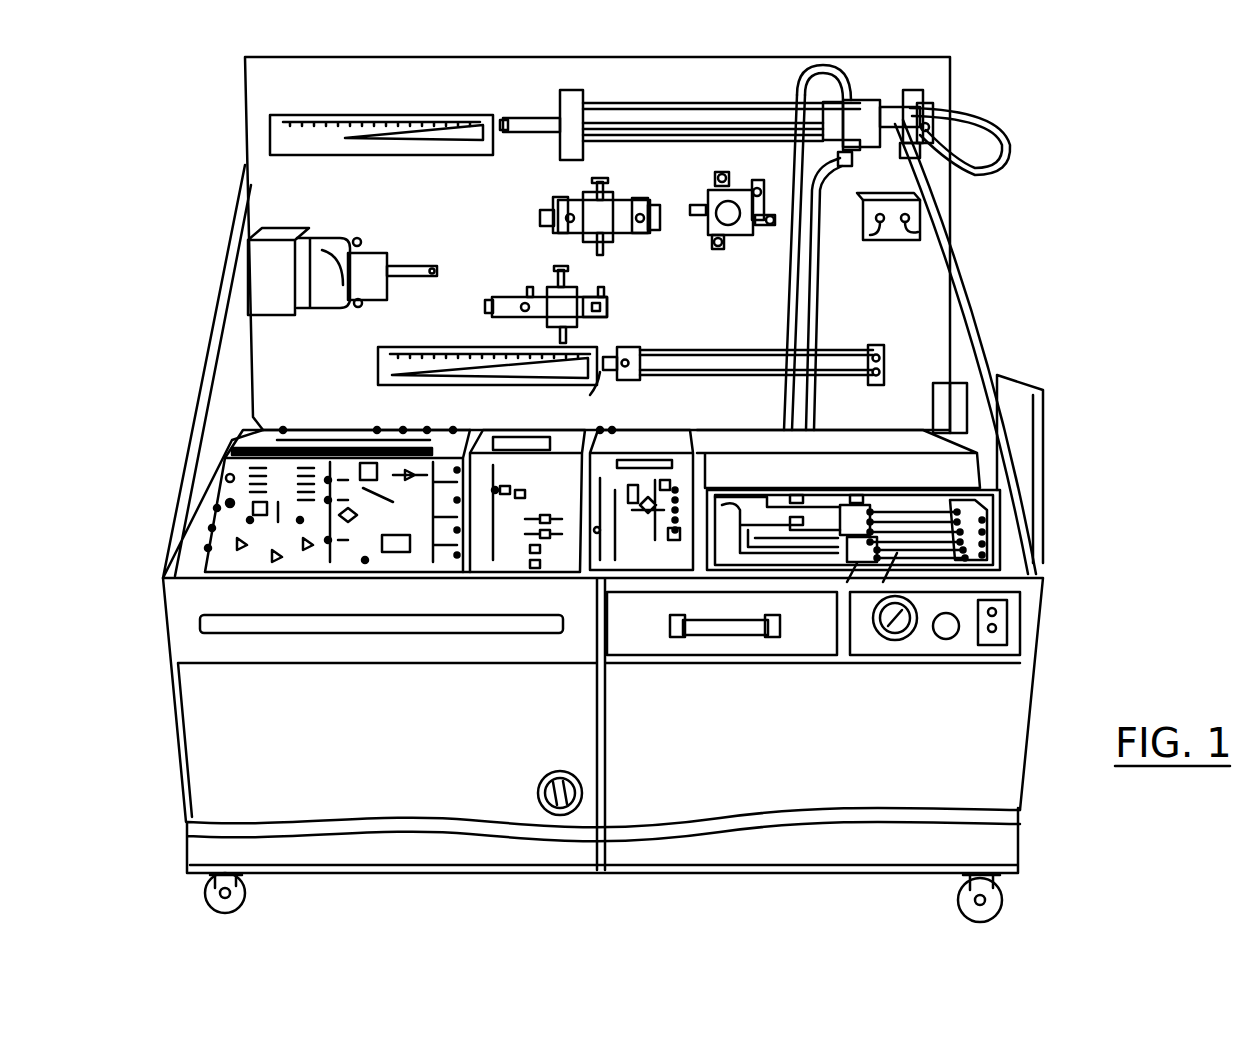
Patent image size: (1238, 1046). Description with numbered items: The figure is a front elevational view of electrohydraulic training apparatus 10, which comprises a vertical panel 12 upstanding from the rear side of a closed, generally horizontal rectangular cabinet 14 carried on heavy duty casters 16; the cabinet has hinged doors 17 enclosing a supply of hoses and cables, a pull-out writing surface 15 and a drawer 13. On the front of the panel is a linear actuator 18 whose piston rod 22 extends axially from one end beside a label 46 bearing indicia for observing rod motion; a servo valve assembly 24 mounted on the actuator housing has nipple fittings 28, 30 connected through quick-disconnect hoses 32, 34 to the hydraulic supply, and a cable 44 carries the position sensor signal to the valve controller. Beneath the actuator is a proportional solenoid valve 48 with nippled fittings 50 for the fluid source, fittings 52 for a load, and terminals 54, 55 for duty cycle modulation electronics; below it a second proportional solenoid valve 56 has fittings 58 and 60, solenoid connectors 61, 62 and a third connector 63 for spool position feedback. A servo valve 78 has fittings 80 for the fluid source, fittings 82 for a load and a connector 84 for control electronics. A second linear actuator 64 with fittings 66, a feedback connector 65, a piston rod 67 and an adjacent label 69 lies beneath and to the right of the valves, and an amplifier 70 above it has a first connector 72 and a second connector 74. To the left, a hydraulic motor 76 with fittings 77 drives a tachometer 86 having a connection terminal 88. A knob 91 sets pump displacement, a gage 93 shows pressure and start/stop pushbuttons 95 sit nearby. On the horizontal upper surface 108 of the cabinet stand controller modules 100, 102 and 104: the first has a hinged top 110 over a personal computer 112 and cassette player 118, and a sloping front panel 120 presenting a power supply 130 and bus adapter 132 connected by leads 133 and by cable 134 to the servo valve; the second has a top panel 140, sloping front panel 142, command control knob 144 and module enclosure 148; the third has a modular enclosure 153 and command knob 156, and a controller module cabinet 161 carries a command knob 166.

The apparatus 10 is at (1154, 189).
The vertical panel 12 is at (962, 84).
The drawer 13 is at (676, 653).
The cabinet 14 is at (1055, 589).
The pull-out writing surface 15 is at (362, 633).
The casters 16 is at (240, 895).
The hinged doors 17 is at (606, 860).
The linear actuator 18 is at (663, 104).
The piston rod 22 is at (512, 115).
The servo valve assembly 24 is at (876, 103).
The nipple fitting 28 is at (812, 72).
The nipple fitting 30 is at (852, 165).
The quick-disconnect fluid hose 32 is at (782, 305).
The quick-disconnect fluid hose 34 is at (818, 285).
The cable 44 is at (1010, 143).
The label 46 is at (402, 117).
The proportional solenoid valve 48 is at (629, 186).
The nippled fittings 50 is at (592, 180).
The fittings 52 is at (562, 198).
The terminal 54 is at (553, 218).
The terminal 55 is at (642, 233).
The second proportional solenoid valve 56 is at (620, 304).
The fittings 58 is at (560, 275).
The fittings 60 is at (525, 290).
The connector 61 is at (528, 314).
The connector 62 is at (612, 313).
The third connector 63 is at (484, 307).
The second linear actuator 64 is at (752, 349).
The connector 65 is at (640, 350).
The fittings 66 is at (890, 352).
The piston rod 67 is at (598, 376).
The label 69 is at (377, 360).
The amplifier 70 is at (925, 217).
The first connector 72 is at (865, 232).
The second connector 74 is at (920, 232).
The hydraulic motor 76 is at (274, 226).
The fittings 77 is at (357, 240).
The servo valve 78 is at (697, 175).
The fittings 80 is at (727, 180).
The fittings 82 is at (772, 215).
The connector 84 is at (760, 221).
The tachometer 86 is at (405, 260).
The connection terminal 88 is at (440, 266).
The knob 91 is at (946, 640).
The gage 93 is at (900, 642).
The start/stop pushbuttons 95 is at (1008, 632).
The controller module 100 is at (915, 430).
The controller module 102 is at (330, 423).
The controller module 104 is at (516, 432).
The horizontal upper surface 108 is at (1010, 560).
The hinged top 110 is at (757, 483).
The personal computer 112 is at (838, 492).
The cassette player 118 is at (866, 492).
The sloping front panel 120 is at (975, 505).
The power supply 130 is at (847, 582).
The bus adapter 132 is at (965, 470).
The leads 133 is at (885, 640).
The cable 134 is at (990, 348).
The top panel 140 is at (237, 452).
The sloping front panel 142 is at (226, 477).
The command control knob 144 is at (213, 508).
The module enclosure 148 is at (233, 453).
The modular enclosure 153 is at (507, 565).
The command knob 156 is at (511, 490).
The controller module cabinet 161 is at (603, 568).
The command knob 166 is at (658, 432).